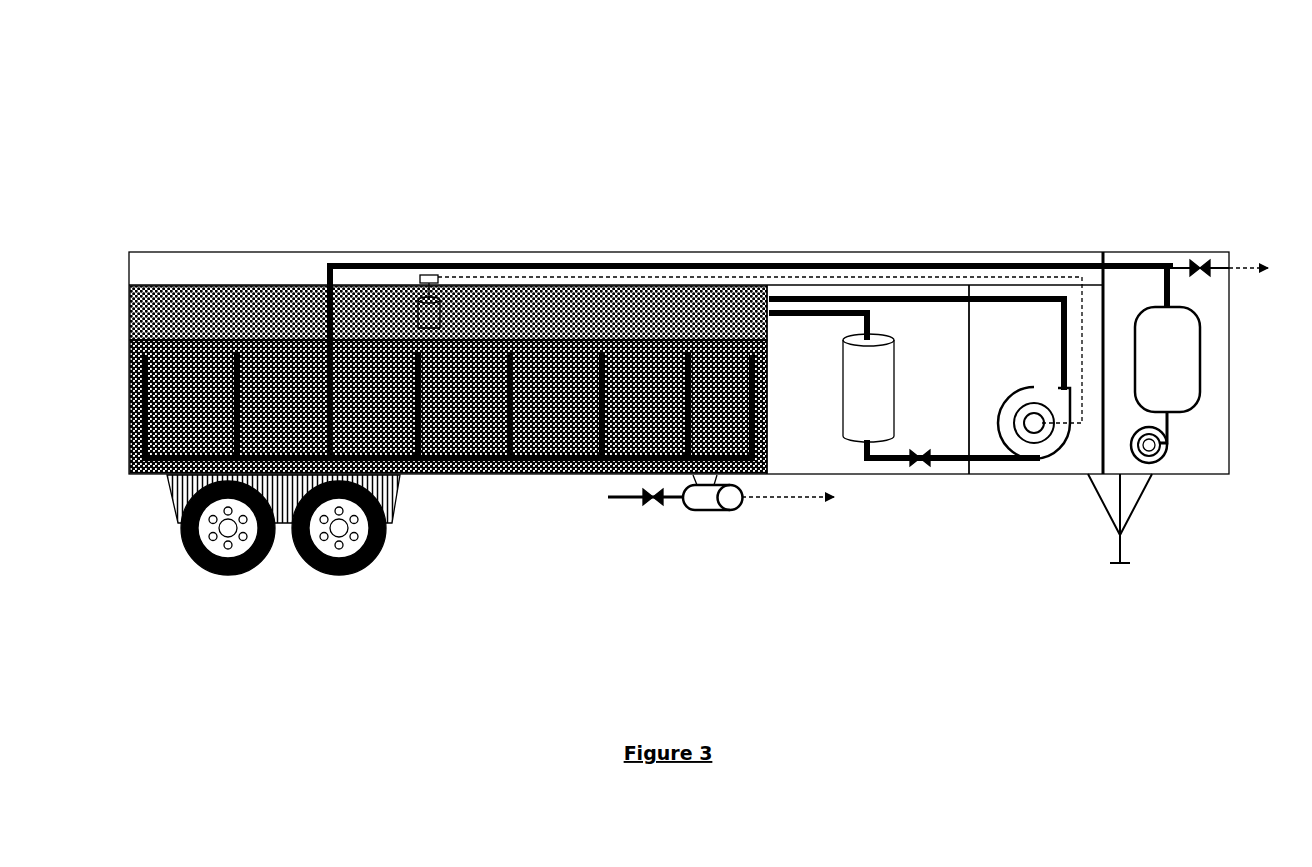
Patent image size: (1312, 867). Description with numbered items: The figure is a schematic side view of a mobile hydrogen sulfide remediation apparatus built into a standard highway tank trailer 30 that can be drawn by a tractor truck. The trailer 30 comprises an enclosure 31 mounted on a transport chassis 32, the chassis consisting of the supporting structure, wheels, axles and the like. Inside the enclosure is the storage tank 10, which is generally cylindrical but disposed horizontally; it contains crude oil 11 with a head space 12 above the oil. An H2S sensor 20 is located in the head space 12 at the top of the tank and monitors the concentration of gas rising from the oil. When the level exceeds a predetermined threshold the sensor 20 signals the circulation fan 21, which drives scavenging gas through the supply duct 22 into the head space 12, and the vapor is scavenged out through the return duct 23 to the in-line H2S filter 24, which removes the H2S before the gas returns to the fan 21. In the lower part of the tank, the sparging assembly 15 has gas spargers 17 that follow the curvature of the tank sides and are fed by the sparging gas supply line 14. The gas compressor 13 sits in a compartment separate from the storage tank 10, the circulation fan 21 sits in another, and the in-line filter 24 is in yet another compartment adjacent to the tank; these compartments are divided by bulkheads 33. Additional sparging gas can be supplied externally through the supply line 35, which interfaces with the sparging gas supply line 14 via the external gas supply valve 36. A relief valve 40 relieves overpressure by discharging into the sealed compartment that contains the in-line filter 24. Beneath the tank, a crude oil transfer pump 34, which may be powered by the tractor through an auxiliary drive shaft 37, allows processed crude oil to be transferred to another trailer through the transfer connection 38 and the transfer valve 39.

The tank trailer 30 is at (145, 168).
The enclosure 31 is at (129, 252).
The transport chassis 32 is at (180, 500).
The storage tank 10 is at (287, 283).
The head space 12 is at (448, 313).
The crude oil 11 is at (180, 412).
The sparging assembly 15 is at (555, 460).
The gas spargers 17 is at (233, 357).
The sparging gas supply line 14 is at (693, 263).
The H2S sensor 20 is at (417, 303).
The return duct 23 is at (840, 313).
The in-line H2S filter 24 is at (868, 388).
The relief valve 40 is at (927, 453).
The bulkheads 33 is at (967, 314).
The supply duct 22 is at (1028, 302).
The circulation fan 21 is at (1045, 430).
The gas compressor 13 is at (1165, 385).
The external gas supply valve 36 is at (1201, 261).
The supply line 35 is at (1259, 284).
The transfer connection 38 is at (631, 500).
The transfer valve 39 is at (645, 505).
The crude oil transfer pump 34 is at (713, 492).
The auxiliary drive shaft 37 is at (803, 500).